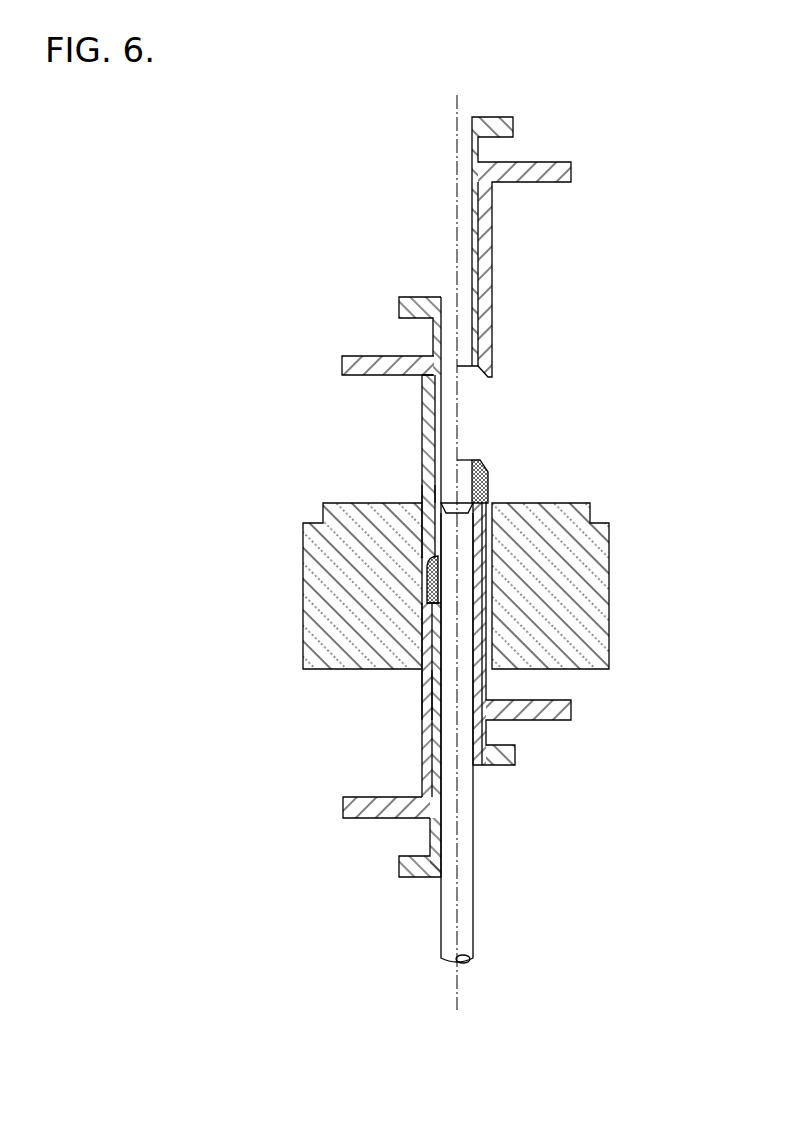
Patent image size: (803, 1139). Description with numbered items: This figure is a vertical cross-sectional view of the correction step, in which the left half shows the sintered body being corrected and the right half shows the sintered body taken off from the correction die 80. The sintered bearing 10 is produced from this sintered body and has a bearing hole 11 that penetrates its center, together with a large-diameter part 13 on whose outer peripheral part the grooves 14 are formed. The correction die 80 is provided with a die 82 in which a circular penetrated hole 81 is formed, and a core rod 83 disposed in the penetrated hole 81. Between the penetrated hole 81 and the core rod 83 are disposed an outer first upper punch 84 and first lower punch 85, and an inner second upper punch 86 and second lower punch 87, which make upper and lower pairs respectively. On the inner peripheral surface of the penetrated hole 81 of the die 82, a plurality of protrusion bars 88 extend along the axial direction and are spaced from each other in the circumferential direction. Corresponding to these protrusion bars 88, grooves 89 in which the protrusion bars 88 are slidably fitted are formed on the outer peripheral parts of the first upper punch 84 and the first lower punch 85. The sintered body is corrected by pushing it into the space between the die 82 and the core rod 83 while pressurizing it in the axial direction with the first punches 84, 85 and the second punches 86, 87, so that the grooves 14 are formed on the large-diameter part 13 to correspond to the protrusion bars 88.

The correction die 80 is at (377, 265).
The sintered bearing 10 is at (486, 445).
The bearing hole 11 is at (457, 455).
The large-diameter part 13 is at (488, 473).
The grooves 14 is at (492, 500).
The penetrated hole 81 is at (490, 690).
The die 82 is at (592, 552).
The core rod 83 is at (472, 806).
The first upper punch 84 is at (356, 355).
The first lower punch 85 is at (343, 816).
The second upper punch 86 is at (430, 410).
The second lower punch 87 is at (420, 748).
The protrusion bars 88 is at (422, 668).
The grooves 89 is at (422, 500).